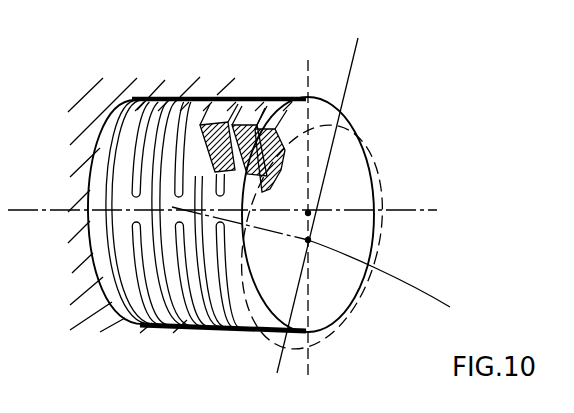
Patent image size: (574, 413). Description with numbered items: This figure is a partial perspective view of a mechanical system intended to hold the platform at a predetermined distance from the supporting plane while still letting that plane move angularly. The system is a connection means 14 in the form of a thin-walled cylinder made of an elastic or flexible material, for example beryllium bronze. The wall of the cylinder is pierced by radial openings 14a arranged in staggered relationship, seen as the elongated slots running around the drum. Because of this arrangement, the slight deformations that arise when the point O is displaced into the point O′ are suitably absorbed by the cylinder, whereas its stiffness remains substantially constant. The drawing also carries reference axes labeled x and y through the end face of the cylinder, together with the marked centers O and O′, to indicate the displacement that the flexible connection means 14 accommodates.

The connection means 14 is at (98, 178).
The radial openings 14a is at (126, 128).
The x axis x is at (232, 212).
The y axis y is at (309, 217).
The point O is at (307, 211).
The point O' O′ is at (311, 246).